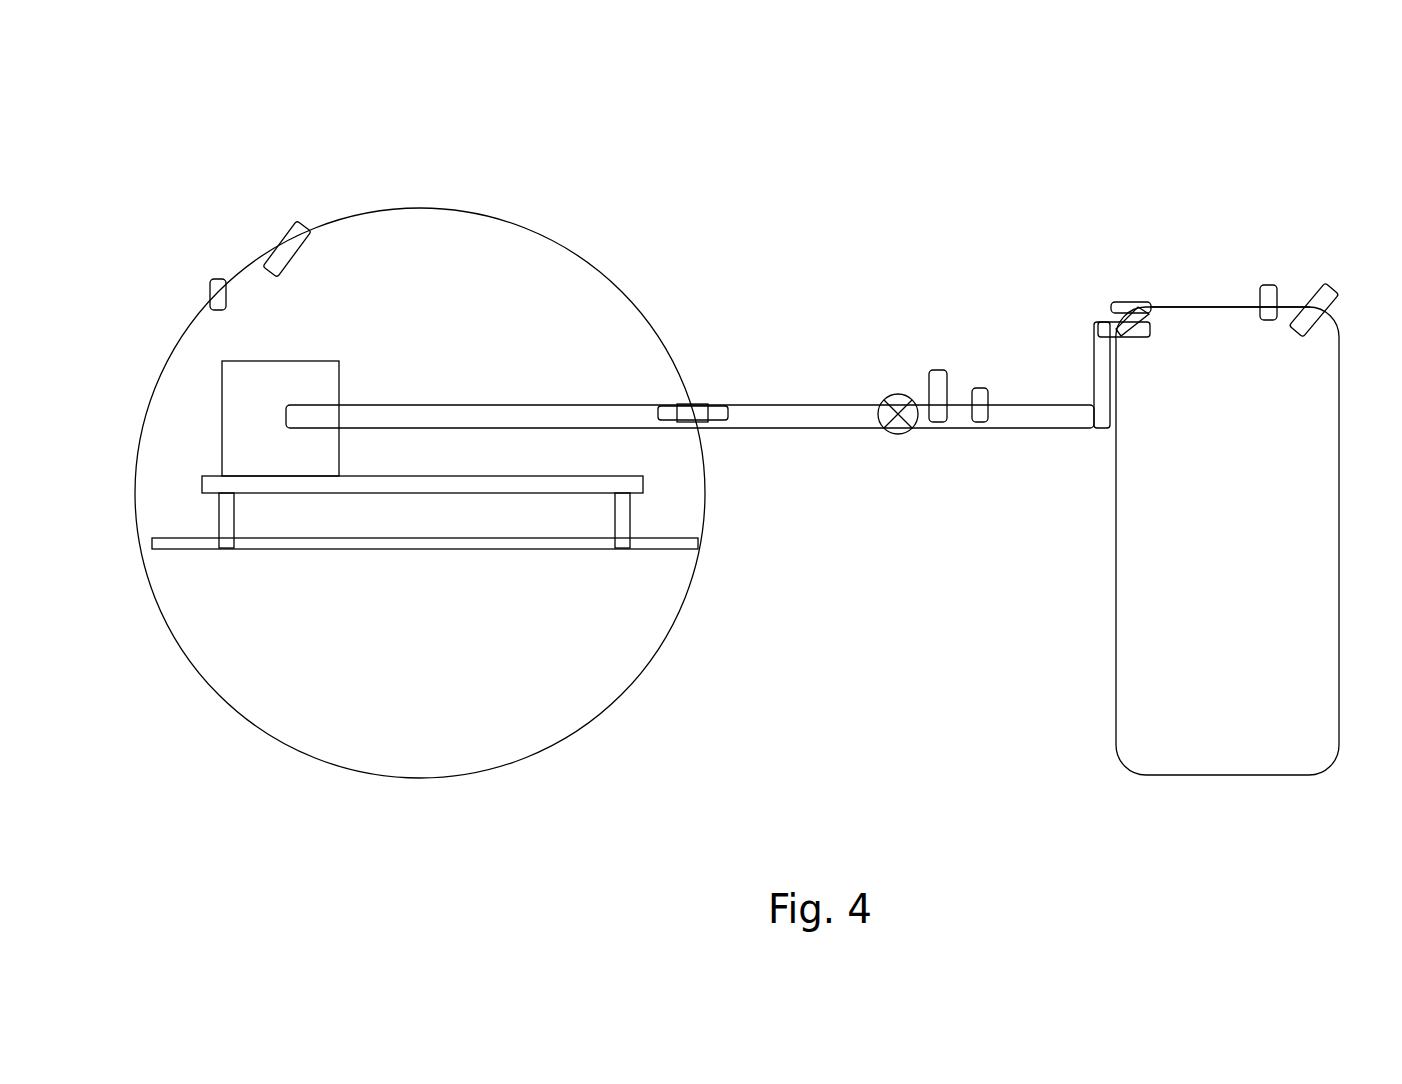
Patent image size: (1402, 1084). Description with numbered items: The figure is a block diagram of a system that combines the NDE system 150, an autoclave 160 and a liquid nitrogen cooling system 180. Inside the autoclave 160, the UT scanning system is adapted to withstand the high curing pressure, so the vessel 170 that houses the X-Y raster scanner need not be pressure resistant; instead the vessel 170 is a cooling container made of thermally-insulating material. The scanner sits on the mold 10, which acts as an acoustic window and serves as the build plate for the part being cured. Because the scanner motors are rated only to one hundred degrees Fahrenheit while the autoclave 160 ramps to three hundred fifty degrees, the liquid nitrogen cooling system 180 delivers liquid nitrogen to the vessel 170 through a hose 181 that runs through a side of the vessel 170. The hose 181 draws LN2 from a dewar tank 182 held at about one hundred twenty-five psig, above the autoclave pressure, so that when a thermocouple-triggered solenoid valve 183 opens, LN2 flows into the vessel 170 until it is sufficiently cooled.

The NDE system 150 is at (246, 189).
The autoclave 160 is at (493, 218).
The vessel 170 is at (300, 361).
The mold 10 is at (517, 474).
The hose 181 is at (460, 414).
The solenoid valve 183 is at (897, 394).
The liquid nitrogen cooling system 180 is at (1190, 232).
The dewar tank 182 is at (1298, 726).